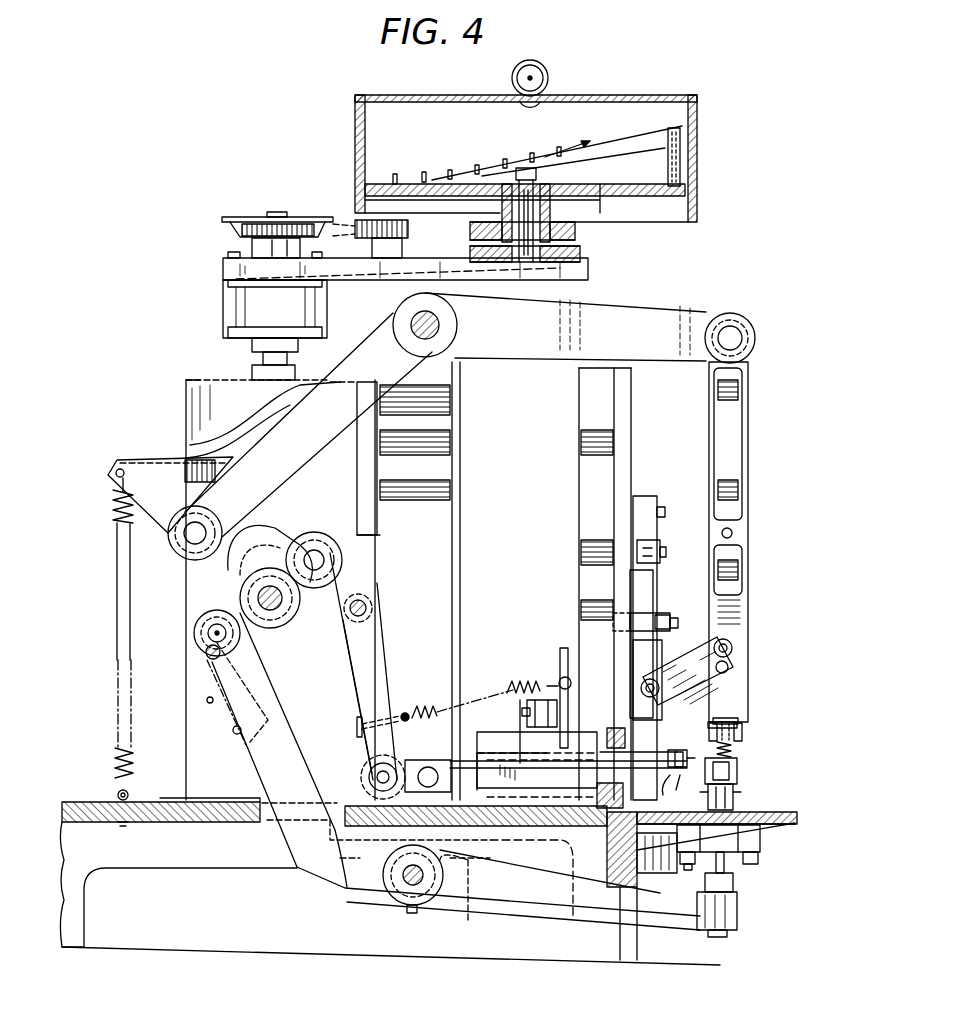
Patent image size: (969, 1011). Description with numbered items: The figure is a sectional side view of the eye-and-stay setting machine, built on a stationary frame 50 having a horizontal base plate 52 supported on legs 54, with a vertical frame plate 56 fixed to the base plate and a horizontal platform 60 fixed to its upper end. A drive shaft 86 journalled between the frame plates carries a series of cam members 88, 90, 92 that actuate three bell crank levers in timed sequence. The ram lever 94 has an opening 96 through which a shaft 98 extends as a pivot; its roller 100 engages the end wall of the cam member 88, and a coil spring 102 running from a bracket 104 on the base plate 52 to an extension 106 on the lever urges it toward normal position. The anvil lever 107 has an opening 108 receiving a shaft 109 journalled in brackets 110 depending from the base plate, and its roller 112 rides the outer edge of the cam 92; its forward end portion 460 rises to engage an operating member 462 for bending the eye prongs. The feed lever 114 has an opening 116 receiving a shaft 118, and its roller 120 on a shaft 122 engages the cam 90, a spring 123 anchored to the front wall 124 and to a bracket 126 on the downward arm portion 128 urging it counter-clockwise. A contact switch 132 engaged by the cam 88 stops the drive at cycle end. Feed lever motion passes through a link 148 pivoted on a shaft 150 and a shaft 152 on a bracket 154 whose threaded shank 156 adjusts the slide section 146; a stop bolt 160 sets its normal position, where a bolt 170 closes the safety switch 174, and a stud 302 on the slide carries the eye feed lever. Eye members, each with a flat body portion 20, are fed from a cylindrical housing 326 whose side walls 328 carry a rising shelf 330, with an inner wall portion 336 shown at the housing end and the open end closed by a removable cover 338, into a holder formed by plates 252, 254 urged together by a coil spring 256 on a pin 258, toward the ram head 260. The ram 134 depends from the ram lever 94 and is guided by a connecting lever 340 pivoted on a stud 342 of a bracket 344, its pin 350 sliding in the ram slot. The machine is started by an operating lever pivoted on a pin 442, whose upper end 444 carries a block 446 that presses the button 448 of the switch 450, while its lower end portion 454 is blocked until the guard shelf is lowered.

The body portion 20 is at (512, 168).
The stationary frame 50 is at (208, 866).
The base plate 52 is at (180, 825).
The legs 54 is at (80, 918).
The frame plate 56 is at (453, 462).
The platform 60 is at (588, 274).
The shaft 86 is at (258, 638).
The cam member 88 is at (232, 566).
The cam member 90 is at (255, 598).
The cam member 92 is at (292, 615).
The ram lever 94 is at (525, 370).
The opening 96 is at (445, 330).
The shaft 98 is at (412, 315).
The roller 100 is at (180, 522).
The coil spring 102 is at (115, 576).
The bracket 104 is at (116, 793).
The extension 106 is at (143, 462).
The anvil lever 107 is at (355, 893).
The opening 108 is at (428, 895).
The shaft 109 is at (400, 880).
The brackets 110 is at (470, 915).
The roller 112 is at (193, 630).
The feed lever 114 is at (385, 650).
The opening 116 is at (368, 604).
The shaft 118 is at (362, 596).
The roller 120 is at (360, 505).
The shaft 122 is at (335, 545).
The spring 123 is at (468, 690).
The front wall 124 is at (578, 545).
The bracket 126 is at (413, 705).
The arm portion 128 is at (365, 692).
The contact switch 132 is at (205, 668).
The ram 134 is at (740, 534).
The slide section 146 is at (493, 760).
The link 148 is at (392, 727).
The shaft 150 is at (370, 770).
The shaft 152 is at (440, 795).
The bracket 154 is at (476, 818).
The threaded shank 156 is at (478, 754).
The stop bolt 160 is at (510, 690).
The bolt 170 is at (532, 704).
The switch 174 is at (566, 648).
The plate 252 is at (673, 748).
The plate 254 is at (700, 770).
The coil spring 256 is at (730, 745).
The pin 258 is at (733, 758).
The ram head 260 is at (740, 774).
The stud 302 is at (600, 790).
The cylindrical housing 326 is at (352, 132).
The side walls 328 is at (366, 132).
The shelf 330 is at (617, 146).
The panel 336 is at (632, 168).
The removable cover 338 is at (585, 100).
The connecting lever 340 is at (730, 662).
The stud 342 is at (660, 690).
The bracket 344 is at (657, 655).
The pin 350 is at (732, 646).
The pin 442 is at (695, 606).
The upper end 444 is at (656, 583).
The block 446 is at (682, 513).
The button 448 is at (660, 545).
The switch 450 is at (640, 508).
The lower end portion 454 is at (615, 830).
The forward end portion 460 is at (722, 880).
The operating member 462 is at (724, 860).